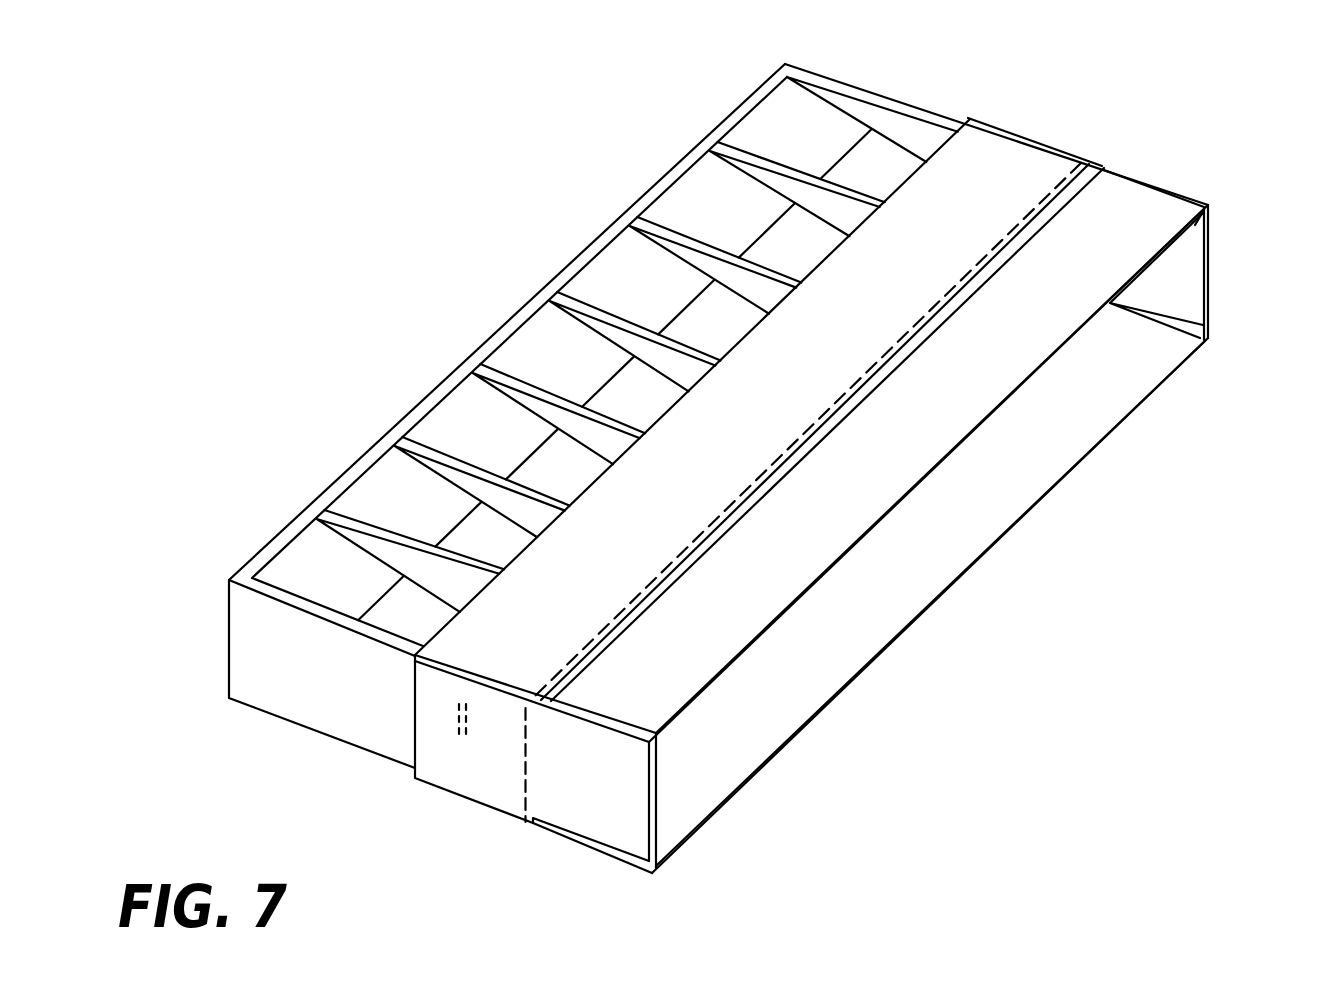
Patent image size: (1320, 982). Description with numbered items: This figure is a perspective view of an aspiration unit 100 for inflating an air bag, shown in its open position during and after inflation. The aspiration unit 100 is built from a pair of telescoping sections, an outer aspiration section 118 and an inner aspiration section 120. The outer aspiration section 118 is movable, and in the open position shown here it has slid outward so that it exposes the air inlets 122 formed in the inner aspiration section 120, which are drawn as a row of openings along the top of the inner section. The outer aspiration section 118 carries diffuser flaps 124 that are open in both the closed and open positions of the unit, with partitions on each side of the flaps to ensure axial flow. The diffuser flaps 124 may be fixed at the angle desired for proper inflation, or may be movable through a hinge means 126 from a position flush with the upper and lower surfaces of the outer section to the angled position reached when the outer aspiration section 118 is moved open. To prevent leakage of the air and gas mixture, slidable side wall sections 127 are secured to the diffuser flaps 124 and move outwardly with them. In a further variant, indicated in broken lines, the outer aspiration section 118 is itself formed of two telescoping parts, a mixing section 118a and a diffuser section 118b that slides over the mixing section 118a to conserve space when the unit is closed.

The aspiration unit 100 is at (535, 166).
The outer aspiration section 118 is at (1008, 155).
The mixing section 118a is at (472, 767).
The diffuser section 118b is at (553, 808).
The inner aspiration section 120 is at (325, 702).
The air inlets 122 is at (566, 275).
The diffuser flaps 124 is at (872, 485).
The hinge means 126 is at (835, 430).
The slidable side wall sections 127 is at (1207, 325).